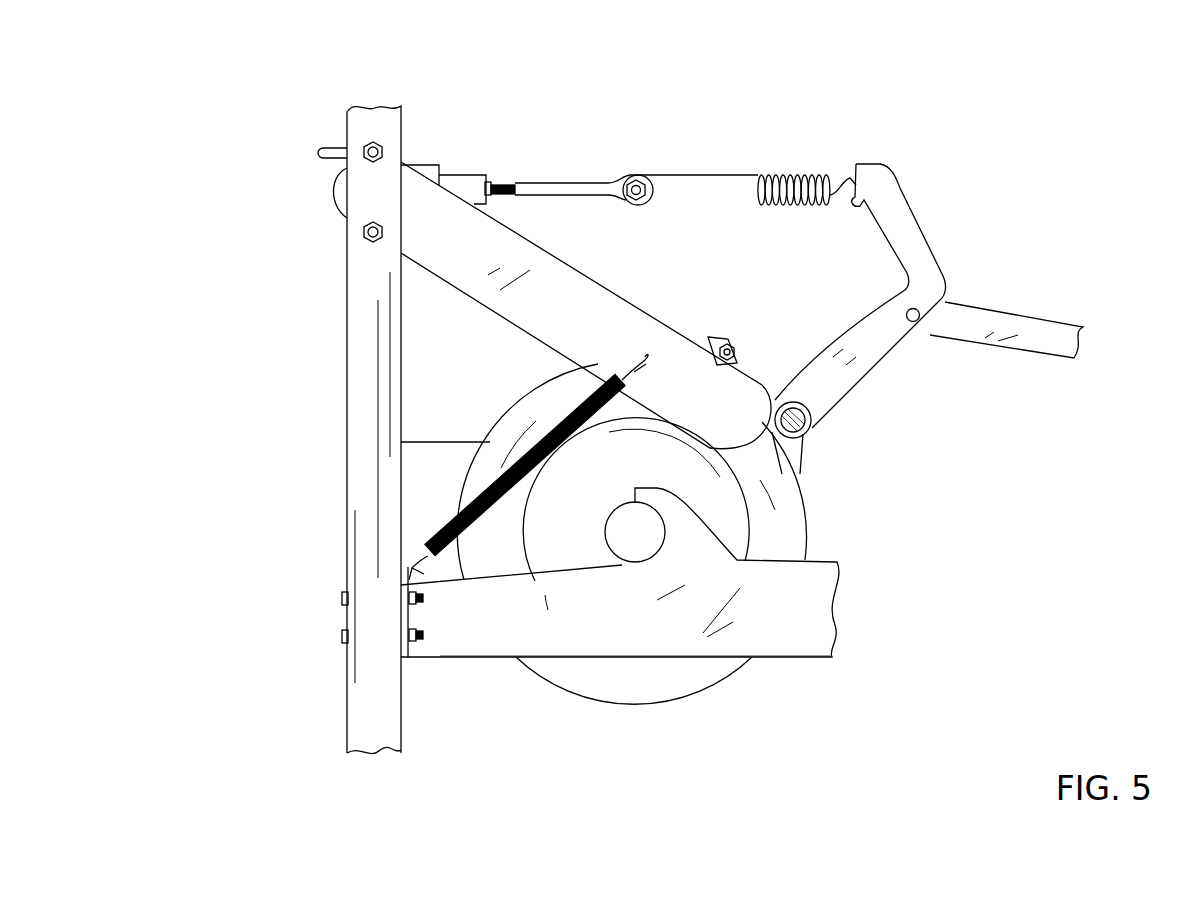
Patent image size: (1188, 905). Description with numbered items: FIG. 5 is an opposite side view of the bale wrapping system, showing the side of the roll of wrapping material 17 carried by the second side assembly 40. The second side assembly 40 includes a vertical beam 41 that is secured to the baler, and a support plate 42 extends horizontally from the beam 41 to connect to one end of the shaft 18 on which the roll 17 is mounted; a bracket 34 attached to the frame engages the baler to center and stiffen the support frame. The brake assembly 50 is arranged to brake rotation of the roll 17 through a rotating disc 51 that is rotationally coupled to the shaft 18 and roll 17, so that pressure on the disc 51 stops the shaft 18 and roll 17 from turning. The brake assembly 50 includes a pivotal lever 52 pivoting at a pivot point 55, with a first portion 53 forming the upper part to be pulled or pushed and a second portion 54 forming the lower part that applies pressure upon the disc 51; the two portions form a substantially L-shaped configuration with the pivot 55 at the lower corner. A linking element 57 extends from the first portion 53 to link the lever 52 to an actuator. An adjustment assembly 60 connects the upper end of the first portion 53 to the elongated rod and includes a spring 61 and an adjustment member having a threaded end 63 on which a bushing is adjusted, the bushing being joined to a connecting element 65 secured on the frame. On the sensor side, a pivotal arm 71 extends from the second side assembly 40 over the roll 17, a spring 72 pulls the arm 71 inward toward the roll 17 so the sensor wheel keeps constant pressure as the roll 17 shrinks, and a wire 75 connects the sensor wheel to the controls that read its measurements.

The roll of wrapping material 17 is at (783, 530).
The shaft 18 is at (637, 528).
The bracket 34 is at (422, 165).
The second side assembly 40 is at (935, 637).
The vertical beam 41 is at (358, 400).
The support plate 42 is at (787, 632).
The brake assembly 50 is at (970, 122).
The rotating disc 51 is at (762, 477).
The pivotal lever 52 is at (930, 215).
The first portion 53 is at (840, 377).
The second portion 54 is at (770, 368).
The pivot point 55 is at (810, 428).
The linking element 57 is at (1047, 348).
The adjustment assembly 60 is at (588, 184).
The spring 61 is at (748, 176).
The threaded end 63 is at (505, 184).
The connecting element 65 is at (467, 183).
The pivotal arm 71 is at (465, 290).
The spring 72 is at (455, 555).
The wire 75 is at (333, 148).